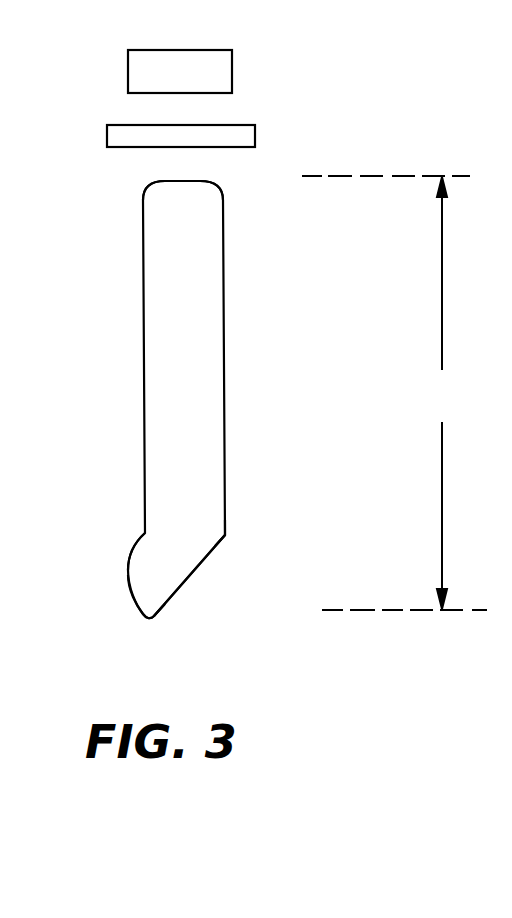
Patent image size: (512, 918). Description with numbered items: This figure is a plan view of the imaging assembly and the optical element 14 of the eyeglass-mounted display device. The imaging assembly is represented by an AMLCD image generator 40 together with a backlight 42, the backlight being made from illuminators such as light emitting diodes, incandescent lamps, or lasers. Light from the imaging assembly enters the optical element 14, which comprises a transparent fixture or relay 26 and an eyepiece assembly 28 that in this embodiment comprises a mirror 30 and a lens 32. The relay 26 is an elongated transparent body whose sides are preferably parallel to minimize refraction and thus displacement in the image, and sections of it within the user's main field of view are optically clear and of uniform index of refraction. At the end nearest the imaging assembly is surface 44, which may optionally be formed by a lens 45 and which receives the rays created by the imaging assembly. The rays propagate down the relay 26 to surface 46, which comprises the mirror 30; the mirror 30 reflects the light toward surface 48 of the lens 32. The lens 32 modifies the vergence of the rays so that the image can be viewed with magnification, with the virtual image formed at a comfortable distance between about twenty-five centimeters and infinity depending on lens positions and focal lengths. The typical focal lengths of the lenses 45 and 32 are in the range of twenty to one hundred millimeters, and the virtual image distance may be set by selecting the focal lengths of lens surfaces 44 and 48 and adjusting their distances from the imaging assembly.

The optical element 14 is at (394, 393).
The relay 26 is at (217, 380).
The eyepiece assembly 28 is at (163, 600).
The mirror 30 is at (193, 570).
The lens 32 is at (127, 593).
The AMLCD image generator 40 is at (247, 134).
The backlight 42 is at (225, 63).
The surface 44 is at (153, 183).
The lens 45 is at (212, 183).
The surface 46 is at (223, 538).
The surface 48 is at (130, 547).